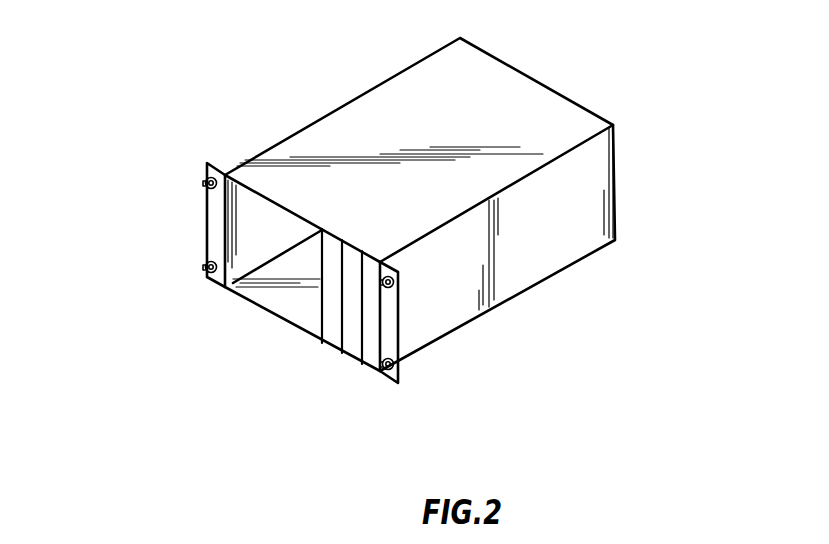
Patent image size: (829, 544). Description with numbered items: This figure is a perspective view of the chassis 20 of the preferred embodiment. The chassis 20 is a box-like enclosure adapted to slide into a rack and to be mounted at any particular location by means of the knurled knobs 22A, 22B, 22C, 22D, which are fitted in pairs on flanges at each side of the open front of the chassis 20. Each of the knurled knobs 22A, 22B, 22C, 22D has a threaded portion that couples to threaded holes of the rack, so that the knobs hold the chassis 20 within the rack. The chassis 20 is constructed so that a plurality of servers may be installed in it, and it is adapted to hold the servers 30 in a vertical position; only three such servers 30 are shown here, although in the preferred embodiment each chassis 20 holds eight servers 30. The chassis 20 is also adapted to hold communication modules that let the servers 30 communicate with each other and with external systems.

The chassis 20 is at (550, 108).
The knurled knob 22A is at (396, 368).
The knurled knob 22B is at (395, 285).
The knurled knob 22C is at (203, 270).
The knurled knob 22D is at (204, 185).
The servers 30 is at (373, 345).